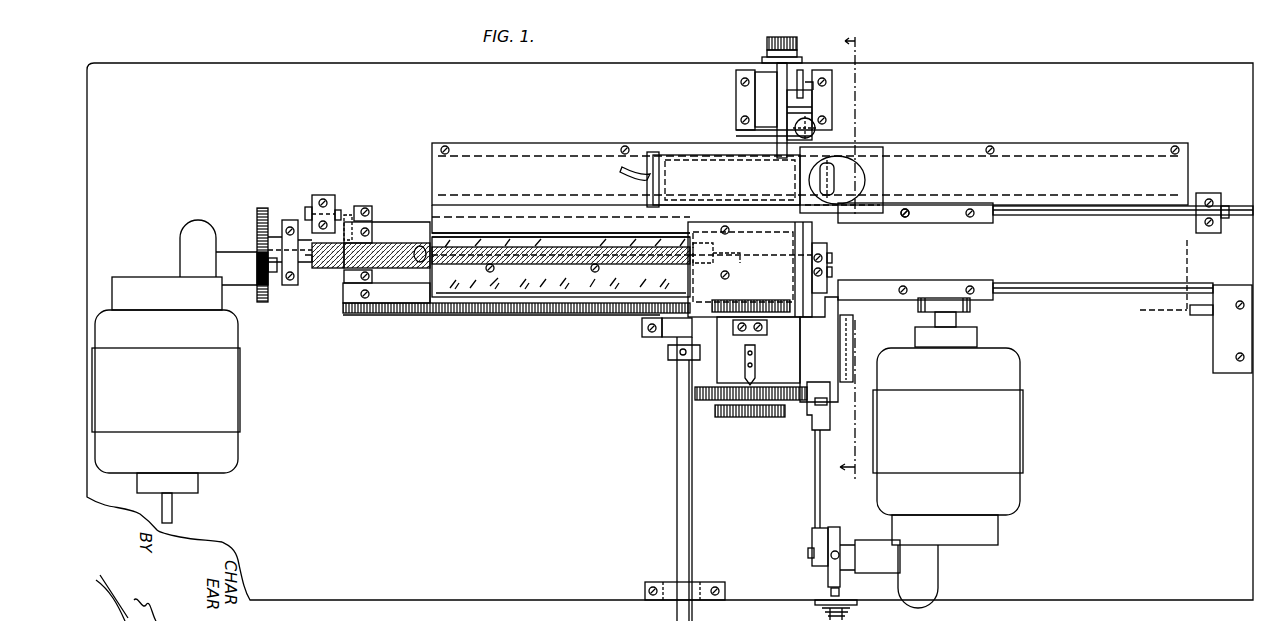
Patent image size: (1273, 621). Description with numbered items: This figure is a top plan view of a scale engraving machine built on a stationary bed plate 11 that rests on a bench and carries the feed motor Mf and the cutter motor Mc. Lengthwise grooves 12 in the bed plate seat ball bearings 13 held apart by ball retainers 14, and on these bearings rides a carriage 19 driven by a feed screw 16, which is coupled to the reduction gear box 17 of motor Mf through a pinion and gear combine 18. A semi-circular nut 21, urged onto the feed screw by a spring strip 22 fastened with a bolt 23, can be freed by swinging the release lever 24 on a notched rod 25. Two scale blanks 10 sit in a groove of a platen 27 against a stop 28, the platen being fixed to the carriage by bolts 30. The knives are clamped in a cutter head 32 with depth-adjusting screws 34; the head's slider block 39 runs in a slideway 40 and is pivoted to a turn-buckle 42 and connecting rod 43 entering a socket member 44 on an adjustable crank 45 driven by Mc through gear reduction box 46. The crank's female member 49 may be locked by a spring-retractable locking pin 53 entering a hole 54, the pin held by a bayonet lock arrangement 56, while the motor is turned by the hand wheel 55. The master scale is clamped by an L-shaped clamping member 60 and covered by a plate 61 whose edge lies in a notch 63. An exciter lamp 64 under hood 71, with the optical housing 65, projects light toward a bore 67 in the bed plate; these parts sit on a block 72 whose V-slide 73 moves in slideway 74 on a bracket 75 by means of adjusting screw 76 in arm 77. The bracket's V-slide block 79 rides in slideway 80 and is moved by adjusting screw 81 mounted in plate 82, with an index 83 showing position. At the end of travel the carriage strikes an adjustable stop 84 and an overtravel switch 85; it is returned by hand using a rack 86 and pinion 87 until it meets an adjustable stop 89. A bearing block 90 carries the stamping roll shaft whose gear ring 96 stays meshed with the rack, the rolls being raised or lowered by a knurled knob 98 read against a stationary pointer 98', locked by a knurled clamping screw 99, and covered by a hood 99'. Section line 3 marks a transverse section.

The section line 3 is at (854, 256).
The scale blanks 10 is at (640, 248).
The bed plate 11 is at (670, 331).
The outside grooves 12 is at (1090, 283).
The ball bearings 13 is at (905, 288).
The ball retainers 14 is at (985, 280).
The feed screw 16 is at (310, 265).
The reduction gear box 17 is at (180, 266).
The pinion and gear combine 18 is at (257, 240).
The carriage 19 is at (346, 298).
The semi-circular nut 21 is at (332, 268).
The spring strip 22 is at (390, 243).
The bolt 23 is at (420, 246).
The release lever 24 is at (364, 206).
The rod 25 is at (348, 215).
The platen 27 is at (561, 264).
The stop 28 is at (432, 278).
The bolts 30 is at (486, 268).
The cutter head 32 is at (828, 272).
The screws 34 is at (828, 256).
The slider block 39 is at (819, 349).
The slideway 40 is at (853, 338).
The turn-buckle 42 is at (806, 400).
The connecting rod 43 is at (814, 472).
The socket member 44 is at (812, 532).
The crank 45 is at (808, 554).
The gear reduction box 46 is at (930, 568).
The female member 49 is at (836, 527).
The locking pin 53 is at (830, 592).
The hole 54 is at (850, 543).
The hand wheel 55 is at (968, 310).
The bayonet lock arrangement 56 is at (822, 612).
The clamping member 60 is at (561, 226).
The cover plate 61 is at (1053, 138).
The notch 63 is at (510, 212).
The exciter lamp 64 is at (860, 165).
The housing 65 is at (800, 190).
The bore 67 is at (832, 165).
The hood 71 is at (880, 178).
The block 72 is at (813, 110).
The V-slide 73 is at (795, 110).
The slideway 74 is at (800, 95).
The bracket 75 is at (778, 70).
The adjusting screw 76 is at (740, 134).
The arm 77 is at (820, 133).
The V-slide block 79 is at (765, 72).
The slideway 80 is at (740, 92).
The adjusting screw 81 is at (795, 37).
The plate 82 is at (800, 85).
The index 83 is at (814, 84).
The adjustable stop 84 is at (1192, 205).
The overtravel switch 85 is at (1196, 306).
The rack 86 is at (580, 313).
The pinion 87 is at (645, 328).
The adjustable stop 89 is at (305, 211).
The bearing block 90 is at (758, 350).
The gear ring 96 is at (756, 300).
The knurled knob 98 is at (751, 417).
The stationary pointer 98' is at (765, 365).
The knurled clamping screw 99 is at (750, 426).
The hood 99' is at (730, 266).